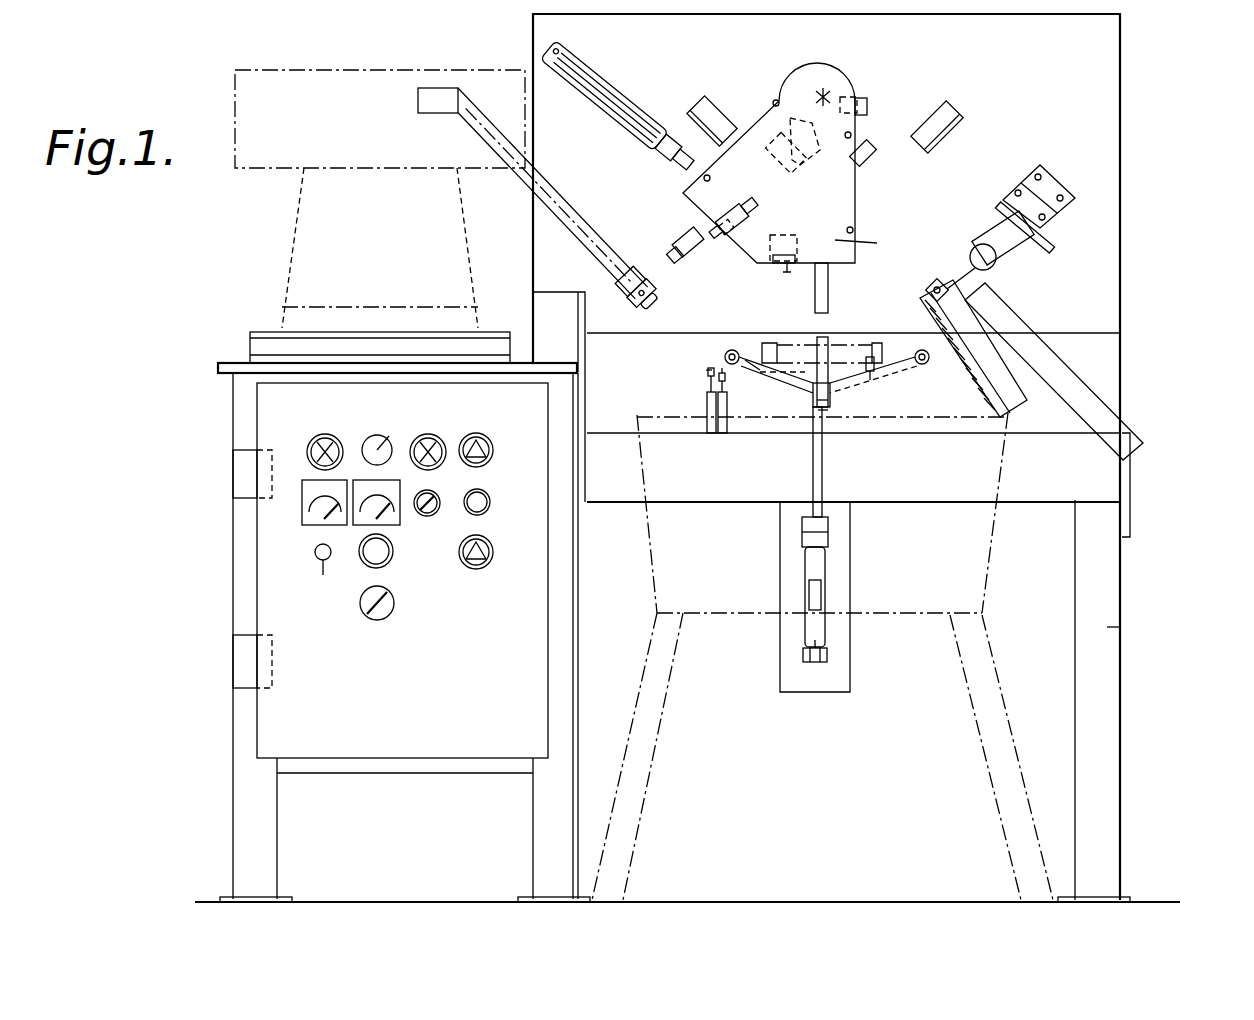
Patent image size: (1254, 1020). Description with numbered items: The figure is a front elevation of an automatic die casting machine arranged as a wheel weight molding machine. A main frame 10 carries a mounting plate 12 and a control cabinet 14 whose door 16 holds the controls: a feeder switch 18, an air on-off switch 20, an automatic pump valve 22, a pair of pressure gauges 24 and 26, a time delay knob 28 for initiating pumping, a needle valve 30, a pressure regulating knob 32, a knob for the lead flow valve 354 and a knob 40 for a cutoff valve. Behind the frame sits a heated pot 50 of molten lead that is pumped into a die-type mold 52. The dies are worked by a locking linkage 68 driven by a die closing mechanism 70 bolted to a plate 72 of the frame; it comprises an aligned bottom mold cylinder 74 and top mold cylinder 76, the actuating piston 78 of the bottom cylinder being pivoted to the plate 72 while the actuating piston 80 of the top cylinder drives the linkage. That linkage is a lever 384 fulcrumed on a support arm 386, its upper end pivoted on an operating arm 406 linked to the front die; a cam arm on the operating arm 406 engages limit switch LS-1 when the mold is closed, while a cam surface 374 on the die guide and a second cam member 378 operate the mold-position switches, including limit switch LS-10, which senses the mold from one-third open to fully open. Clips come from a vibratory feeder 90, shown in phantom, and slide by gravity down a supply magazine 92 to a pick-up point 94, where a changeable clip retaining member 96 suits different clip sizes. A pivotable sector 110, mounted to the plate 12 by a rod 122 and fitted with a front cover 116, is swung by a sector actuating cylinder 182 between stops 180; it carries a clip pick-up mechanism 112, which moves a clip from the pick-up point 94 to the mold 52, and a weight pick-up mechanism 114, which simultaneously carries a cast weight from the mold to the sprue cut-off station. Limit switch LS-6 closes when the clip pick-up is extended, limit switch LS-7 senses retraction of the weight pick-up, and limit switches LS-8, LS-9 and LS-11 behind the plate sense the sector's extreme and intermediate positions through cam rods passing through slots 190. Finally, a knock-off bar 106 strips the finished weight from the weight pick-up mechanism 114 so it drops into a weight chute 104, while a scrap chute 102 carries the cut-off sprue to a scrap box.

The main frame 10 is at (1107, 627).
The mounting plate 12 is at (1100, 90).
The control cabinet 14 is at (373, 770).
The door 16 is at (525, 653).
The feeder switch 18 is at (336, 440).
The air on-off switch 20 is at (380, 440).
The automatic pump valve 22 is at (490, 450).
The pressure gauge 24 is at (321, 505).
The pressure gauge 26 is at (387, 507).
The time delay knob 28 is at (434, 500).
The needle valve 30 is at (362, 598).
The pressure regulating knob 32 is at (384, 620).
The knob 40 is at (489, 563).
The pot 50 is at (968, 587).
The mold 52 is at (880, 375).
The locking linkage 68 is at (828, 417).
The die closing mechanism 70 is at (826, 594).
The plate 72 is at (835, 682).
The bottom mold cylinder 74 is at (808, 565).
The top mold cylinder 76 is at (822, 495).
The actuating piston 78 is at (822, 655).
The actuating piston 80 is at (740, 490).
The vibratory feeder 90 is at (387, 92).
The supply magazine 92 is at (592, 224).
The pick-up point 94 is at (660, 285).
The clip retaining member 96 is at (631, 301).
The scrap chute 102 is at (1067, 383).
The weight chute 104 is at (1010, 418).
The knock-off bar 106 is at (940, 282).
The sector 110 is at (855, 203).
The clip pick-up mechanism 112 is at (697, 244).
The weight pick-up mechanism 114 is at (828, 293).
The front cover 116 is at (884, 242).
The rod 122 is at (824, 92).
The stops 180 is at (715, 120).
The sector actuating cylinder 182 is at (623, 100).
The slots 190 is at (825, 160).
The lead flow valve 354 is at (447, 428).
The cam surface 374 is at (722, 368).
The second cam member 378 is at (706, 370).
The lever 384 is at (818, 412).
The support arm 386 is at (815, 403).
The operating arm 406 is at (840, 343).
The limit switch LS-1 is at (838, 393).
The limit switch LS-6 is at (764, 218).
The limit switch LS-7 is at (770, 273).
The limit switch LS-8 is at (881, 143).
The limit switch LS-9 is at (770, 140).
The limit switch LS-10 is at (708, 385).
The limit switch LS-11 is at (880, 92).